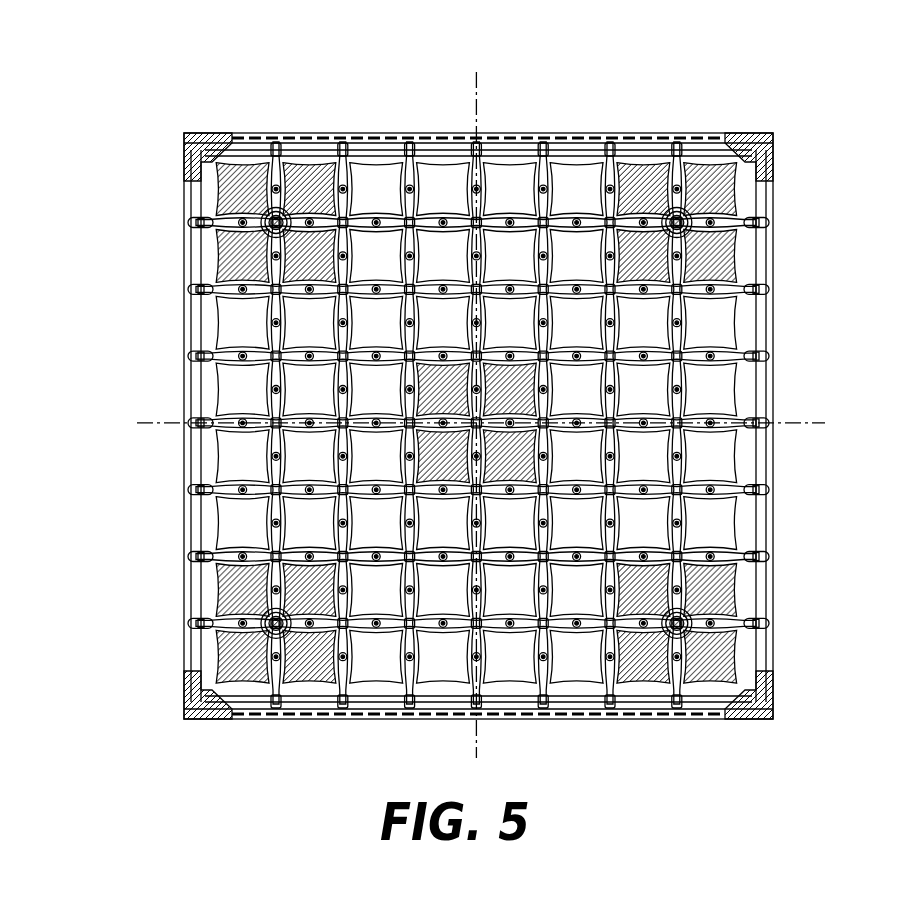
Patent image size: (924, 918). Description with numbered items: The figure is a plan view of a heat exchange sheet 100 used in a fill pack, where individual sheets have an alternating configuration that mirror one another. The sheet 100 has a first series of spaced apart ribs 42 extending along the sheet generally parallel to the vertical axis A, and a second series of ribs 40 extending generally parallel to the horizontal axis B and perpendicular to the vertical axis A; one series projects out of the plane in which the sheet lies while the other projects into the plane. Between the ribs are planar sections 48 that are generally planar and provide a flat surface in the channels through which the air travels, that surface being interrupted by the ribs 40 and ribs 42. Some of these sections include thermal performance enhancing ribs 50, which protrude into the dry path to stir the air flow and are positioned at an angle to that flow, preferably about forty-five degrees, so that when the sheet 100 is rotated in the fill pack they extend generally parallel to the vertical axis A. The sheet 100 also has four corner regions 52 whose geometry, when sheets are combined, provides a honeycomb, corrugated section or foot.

The sheet 100 is at (758, 90).
The second series of ribs 40 is at (235, 352).
The first series of spaced apart ribs 42 is at (548, 184).
The planar sections 48 is at (390, 337).
The thermal performance enhancing ribs 50 is at (313, 184).
The corner regions 52 is at (216, 132).